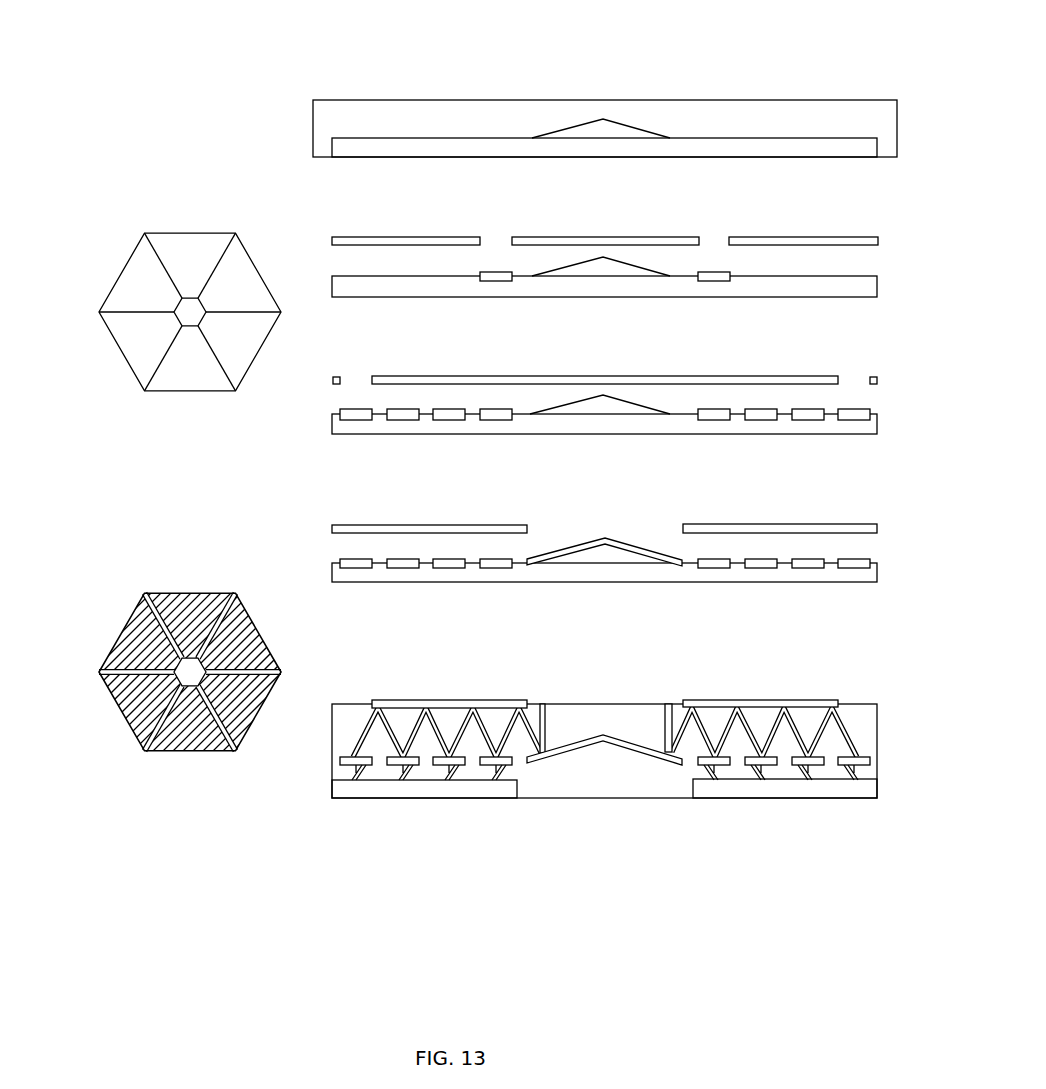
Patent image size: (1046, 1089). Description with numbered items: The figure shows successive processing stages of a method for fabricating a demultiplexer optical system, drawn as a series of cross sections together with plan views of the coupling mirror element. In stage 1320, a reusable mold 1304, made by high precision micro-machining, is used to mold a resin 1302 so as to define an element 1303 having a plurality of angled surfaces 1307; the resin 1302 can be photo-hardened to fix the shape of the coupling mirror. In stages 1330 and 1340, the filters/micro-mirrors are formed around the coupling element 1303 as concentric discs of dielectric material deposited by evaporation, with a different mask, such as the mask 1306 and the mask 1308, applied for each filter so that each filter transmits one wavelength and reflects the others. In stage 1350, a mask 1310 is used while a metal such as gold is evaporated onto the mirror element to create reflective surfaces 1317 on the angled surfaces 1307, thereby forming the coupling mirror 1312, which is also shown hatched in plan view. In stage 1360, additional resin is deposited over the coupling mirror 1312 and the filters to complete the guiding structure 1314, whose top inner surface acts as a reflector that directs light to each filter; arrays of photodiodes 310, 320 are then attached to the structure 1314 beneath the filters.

The resin 1302 is at (690, 157).
The element 1303 is at (401, 235).
The reusable mold 1304 is at (497, 110).
The first mask layer 1306 is at (385, 237).
The angled surfaces 1307 is at (653, 128).
The mask 1308 is at (604, 375).
The mask 1310 is at (500, 522).
The coupling mirror 1312 is at (341, 665).
The guiding structure 1314 is at (615, 715).
The reflective surfaces 1317 is at (138, 653).
The stage 1320 is at (563, 105).
The stage 1330 is at (569, 205).
The stage 1340 is at (588, 355).
The stage 1350 is at (588, 502).
The stage 1360 is at (588, 745).
The array of photodiodes 310 is at (344, 800).
The array of photodiodes 320 is at (700, 790).